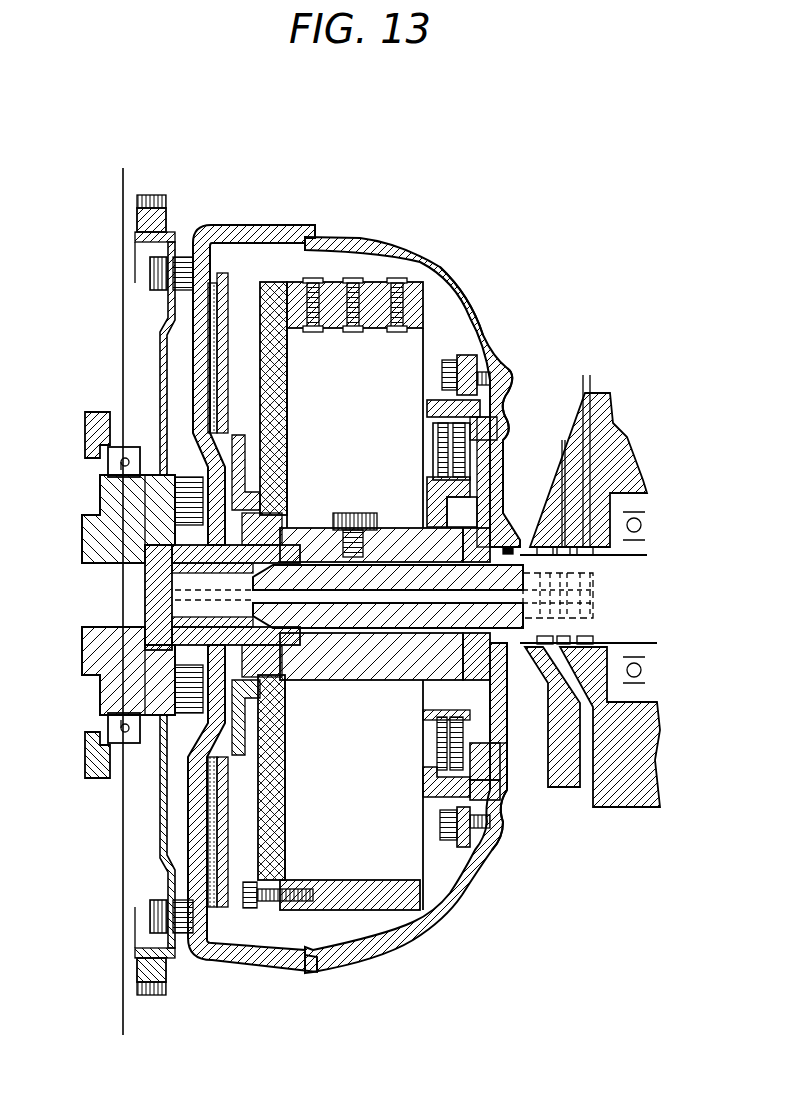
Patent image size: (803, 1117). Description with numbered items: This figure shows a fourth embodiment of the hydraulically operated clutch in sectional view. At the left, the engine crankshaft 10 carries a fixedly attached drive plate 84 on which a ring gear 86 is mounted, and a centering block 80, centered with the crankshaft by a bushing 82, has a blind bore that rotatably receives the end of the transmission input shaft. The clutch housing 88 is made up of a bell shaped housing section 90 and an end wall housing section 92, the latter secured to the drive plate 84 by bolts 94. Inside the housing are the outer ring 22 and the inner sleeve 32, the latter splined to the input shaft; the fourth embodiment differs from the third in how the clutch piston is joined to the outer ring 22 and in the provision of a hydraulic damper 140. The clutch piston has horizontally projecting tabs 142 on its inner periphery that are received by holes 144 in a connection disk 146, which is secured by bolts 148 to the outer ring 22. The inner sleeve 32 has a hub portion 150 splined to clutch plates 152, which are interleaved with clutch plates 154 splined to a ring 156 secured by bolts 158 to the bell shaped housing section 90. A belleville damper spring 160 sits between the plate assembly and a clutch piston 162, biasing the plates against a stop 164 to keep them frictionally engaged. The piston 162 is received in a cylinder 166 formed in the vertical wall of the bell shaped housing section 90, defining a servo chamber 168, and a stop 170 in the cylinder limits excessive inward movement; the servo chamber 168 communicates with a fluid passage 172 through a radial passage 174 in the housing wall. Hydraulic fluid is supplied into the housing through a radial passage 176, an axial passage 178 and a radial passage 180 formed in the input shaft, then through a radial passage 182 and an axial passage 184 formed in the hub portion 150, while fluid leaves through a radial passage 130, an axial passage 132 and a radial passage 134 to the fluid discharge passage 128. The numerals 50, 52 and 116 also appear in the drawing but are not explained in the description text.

The engine crankshaft 10 is at (95, 535).
The outer ring 22 is at (380, 945).
The inner sleeve 32 is at (325, 528).
The bolts 50 is at (397, 333).
The bolt 52 is at (357, 513).
The centering block 80 is at (160, 570).
The bushing 82 is at (200, 605).
The drive plate 84 is at (162, 330).
The ring gear 86 is at (140, 222).
The clutch housing 88 is at (430, 255).
The bell shaped housing section 90 is at (470, 292).
The end wall housing section 92 is at (240, 232).
The bolts 94 is at (150, 272).
The lower sleeve 116 is at (365, 670).
The fluid discharge passage 128 is at (605, 775).
The radial passage 130 is at (565, 590).
The axial passage 132 is at (350, 632).
The radial passage 134 is at (285, 665).
The hydraulic damper 140 is at (445, 905).
The horizontally projecting tabs 142 is at (262, 478).
The holes 144 is at (262, 500).
The connection disk 146 is at (287, 404).
The bolts 148 is at (250, 912).
The hub portion 150 is at (470, 488).
The clutch plates 152 is at (465, 745).
The clutch plates 154 is at (435, 400).
The ring 156 is at (487, 837).
The bolts 158 is at (482, 865).
The belleville damper spring 160 is at (495, 470).
The clutch piston 162 is at (505, 420).
The stop 164 is at (430, 785).
The cylinder 166 is at (480, 410).
The servo chamber 168 is at (492, 770).
The stop 170 is at (490, 792).
The fluid passage 172 is at (583, 448).
The radial passage 174 is at (478, 511).
The radial passage 176 is at (378, 632).
The axial passage 178 is at (500, 668).
The radial passage 180 is at (565, 606).
The radial passage 182 is at (463, 545).
The axial passage 184 is at (445, 470).